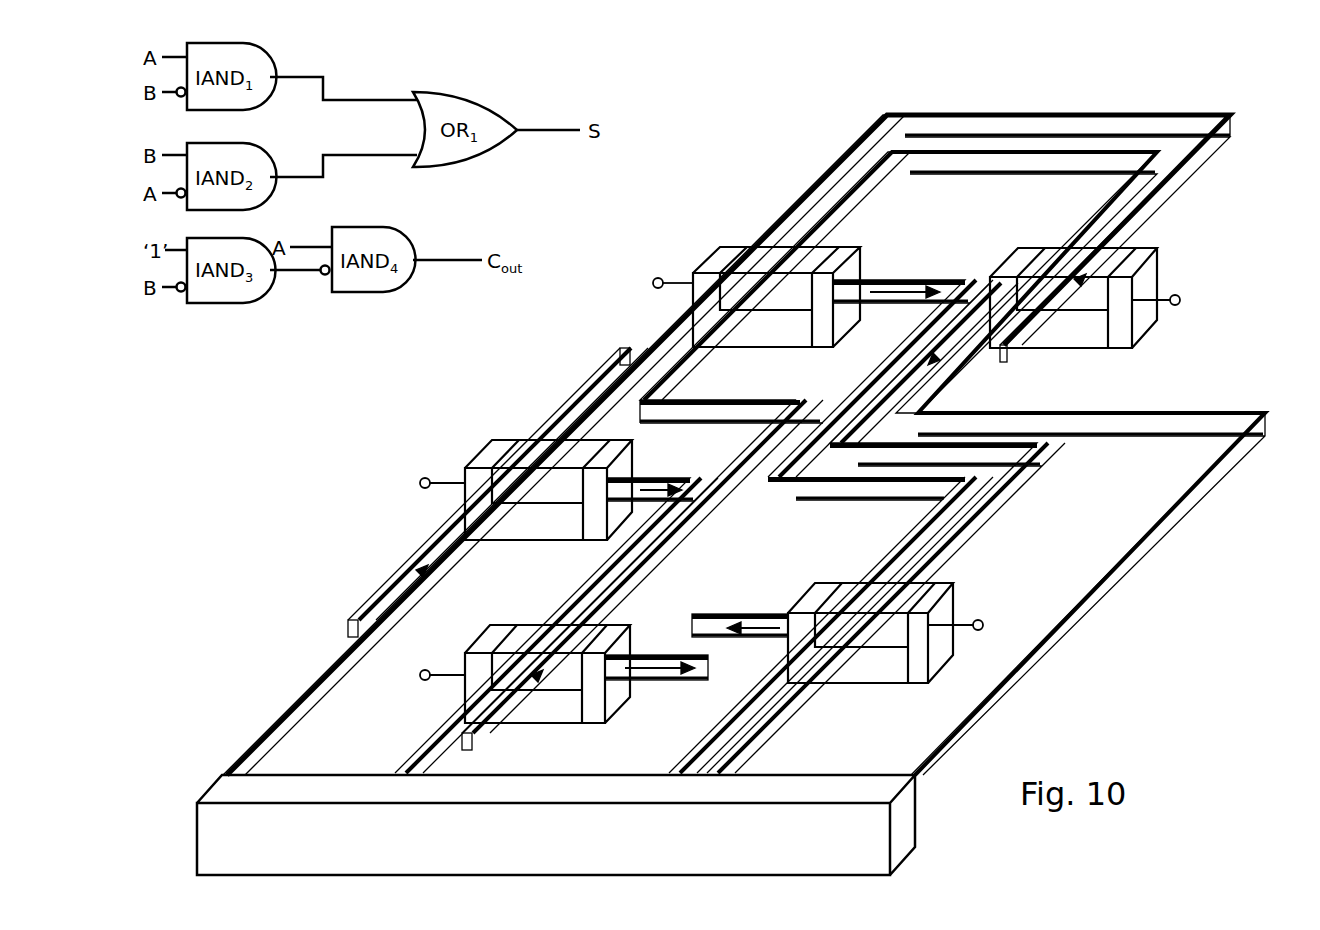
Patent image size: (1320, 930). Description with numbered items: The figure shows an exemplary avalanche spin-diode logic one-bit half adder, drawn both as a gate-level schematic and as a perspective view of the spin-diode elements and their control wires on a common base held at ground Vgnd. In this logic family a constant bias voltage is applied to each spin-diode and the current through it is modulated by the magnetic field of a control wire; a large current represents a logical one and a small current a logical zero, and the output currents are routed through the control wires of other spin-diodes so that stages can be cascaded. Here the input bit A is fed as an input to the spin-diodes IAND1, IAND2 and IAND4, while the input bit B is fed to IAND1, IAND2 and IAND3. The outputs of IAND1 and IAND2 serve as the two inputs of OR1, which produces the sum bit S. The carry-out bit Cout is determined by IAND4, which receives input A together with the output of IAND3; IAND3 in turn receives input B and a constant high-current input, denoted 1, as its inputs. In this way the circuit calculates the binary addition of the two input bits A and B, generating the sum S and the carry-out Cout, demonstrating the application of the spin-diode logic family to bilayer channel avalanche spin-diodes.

The spin-diode IAND1 is at (747, 284).
The spin-diode IAND2 is at (1104, 284).
The spin-diode IAND3 is at (517, 475).
The spin-diode IAND4 is at (516, 661).
The OR gate OR1 is at (902, 619).
The input A is at (496, 710).
The input B is at (1040, 348).
The constant Ihigh input 1 is at (368, 594).
The sum output S is at (703, 614).
The carry-out output Cout is at (691, 690).
The ground Vgnd is at (556, 825).